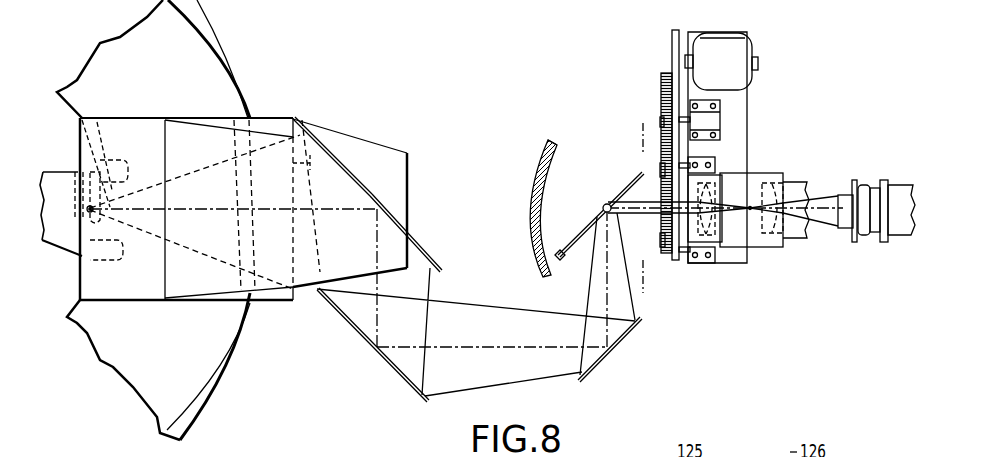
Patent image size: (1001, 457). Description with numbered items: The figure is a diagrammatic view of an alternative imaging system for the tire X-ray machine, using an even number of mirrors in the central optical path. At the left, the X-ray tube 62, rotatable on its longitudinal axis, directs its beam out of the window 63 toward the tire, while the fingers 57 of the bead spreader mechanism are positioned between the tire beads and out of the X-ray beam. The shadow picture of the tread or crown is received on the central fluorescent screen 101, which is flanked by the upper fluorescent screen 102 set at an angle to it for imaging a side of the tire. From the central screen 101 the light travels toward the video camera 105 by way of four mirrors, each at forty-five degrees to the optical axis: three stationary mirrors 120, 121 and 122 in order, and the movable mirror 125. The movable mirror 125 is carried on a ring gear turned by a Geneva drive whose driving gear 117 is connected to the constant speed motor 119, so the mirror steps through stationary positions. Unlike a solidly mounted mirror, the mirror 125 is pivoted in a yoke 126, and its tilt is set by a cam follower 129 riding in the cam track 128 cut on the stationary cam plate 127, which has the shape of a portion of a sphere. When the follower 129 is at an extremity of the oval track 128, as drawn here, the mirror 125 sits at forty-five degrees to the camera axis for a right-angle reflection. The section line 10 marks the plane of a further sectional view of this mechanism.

The section line 10 is at (623, 133).
The fingers 57 is at (122, 160).
The X-ray tube 62 is at (70, 272).
The window 63 is at (80, 214).
The central fluorescent screen 101 is at (317, 135).
The upper fluorescent screen 102 is at (273, 127).
The video camera 105 is at (902, 192).
The driving gear 117 is at (677, 108).
The constant speed motor 119 is at (733, 50).
The stationary mirror 120 is at (418, 245).
The stationary mirror 121 is at (393, 372).
The stationary mirror 122 is at (600, 358).
The movable mirror 125 is at (570, 240).
The yoke 126 is at (640, 214).
The stationary cam plate 127 is at (532, 167).
The cam track 128 is at (557, 148).
The cam follower 129 is at (560, 262).